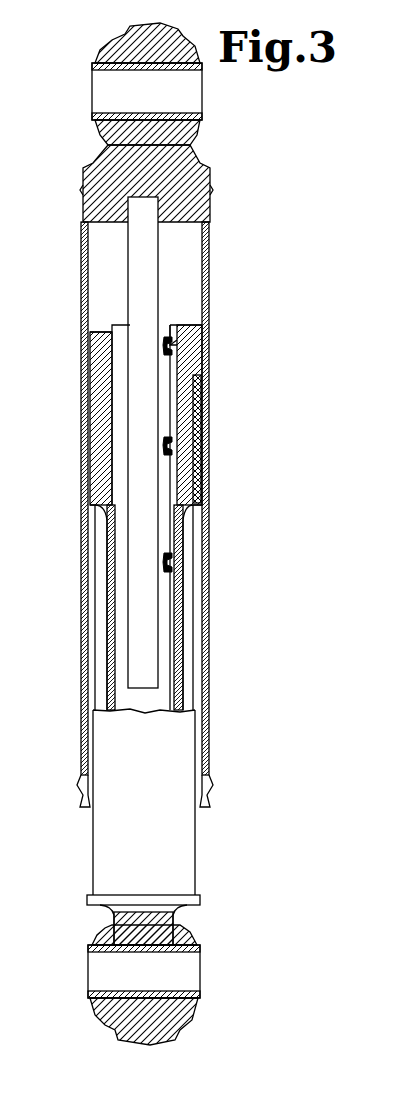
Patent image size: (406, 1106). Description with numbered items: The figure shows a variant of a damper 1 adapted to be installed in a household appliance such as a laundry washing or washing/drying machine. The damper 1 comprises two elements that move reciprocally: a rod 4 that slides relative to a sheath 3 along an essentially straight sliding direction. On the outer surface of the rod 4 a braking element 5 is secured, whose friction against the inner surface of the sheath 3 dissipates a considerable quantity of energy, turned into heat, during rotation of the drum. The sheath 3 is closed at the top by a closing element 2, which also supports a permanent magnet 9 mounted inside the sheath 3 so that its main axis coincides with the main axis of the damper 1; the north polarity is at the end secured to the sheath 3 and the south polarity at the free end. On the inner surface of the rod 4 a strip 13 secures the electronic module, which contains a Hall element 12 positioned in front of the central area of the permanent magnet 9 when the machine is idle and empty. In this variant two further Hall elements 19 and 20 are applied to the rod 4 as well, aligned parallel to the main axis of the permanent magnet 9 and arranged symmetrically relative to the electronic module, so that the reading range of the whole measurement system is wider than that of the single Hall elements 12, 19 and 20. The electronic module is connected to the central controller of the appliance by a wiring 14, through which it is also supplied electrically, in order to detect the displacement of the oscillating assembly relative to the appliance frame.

The damper 1 is at (245, 666).
The closing element 2 is at (118, 172).
The sheath 3 is at (210, 283).
The rod 4 is at (98, 490).
The braking element 5 is at (92, 442).
The permanent magnet 9 is at (150, 252).
The Hall element 12 is at (165, 442).
The strip 13 is at (172, 372).
The wiring 14 is at (188, 915).
The Hall element 19 is at (167, 343).
The Hall element 20 is at (165, 562).